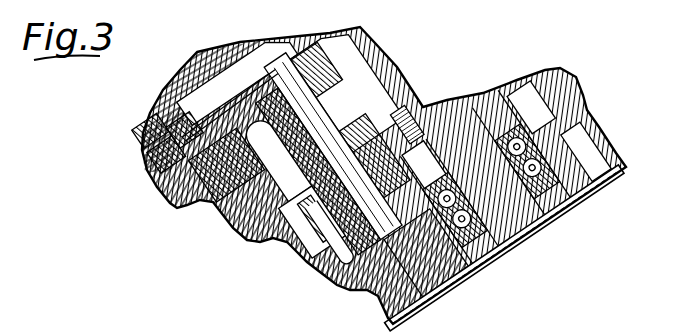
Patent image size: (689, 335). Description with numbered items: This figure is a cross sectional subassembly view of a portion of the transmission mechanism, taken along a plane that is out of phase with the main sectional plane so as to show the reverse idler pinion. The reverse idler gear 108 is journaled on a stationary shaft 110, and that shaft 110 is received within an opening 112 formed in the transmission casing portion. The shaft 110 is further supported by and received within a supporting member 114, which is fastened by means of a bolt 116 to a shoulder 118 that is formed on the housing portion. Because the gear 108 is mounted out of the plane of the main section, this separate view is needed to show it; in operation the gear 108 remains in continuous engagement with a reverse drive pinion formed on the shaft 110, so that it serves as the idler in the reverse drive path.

The reverse idler gear 108 is at (243, 238).
The stationary shaft 110 is at (230, 230).
The opening 112 is at (382, 296).
The supporting member 114 is at (245, 108).
The bolt 116 is at (143, 140).
The shoulder 118 is at (160, 172).